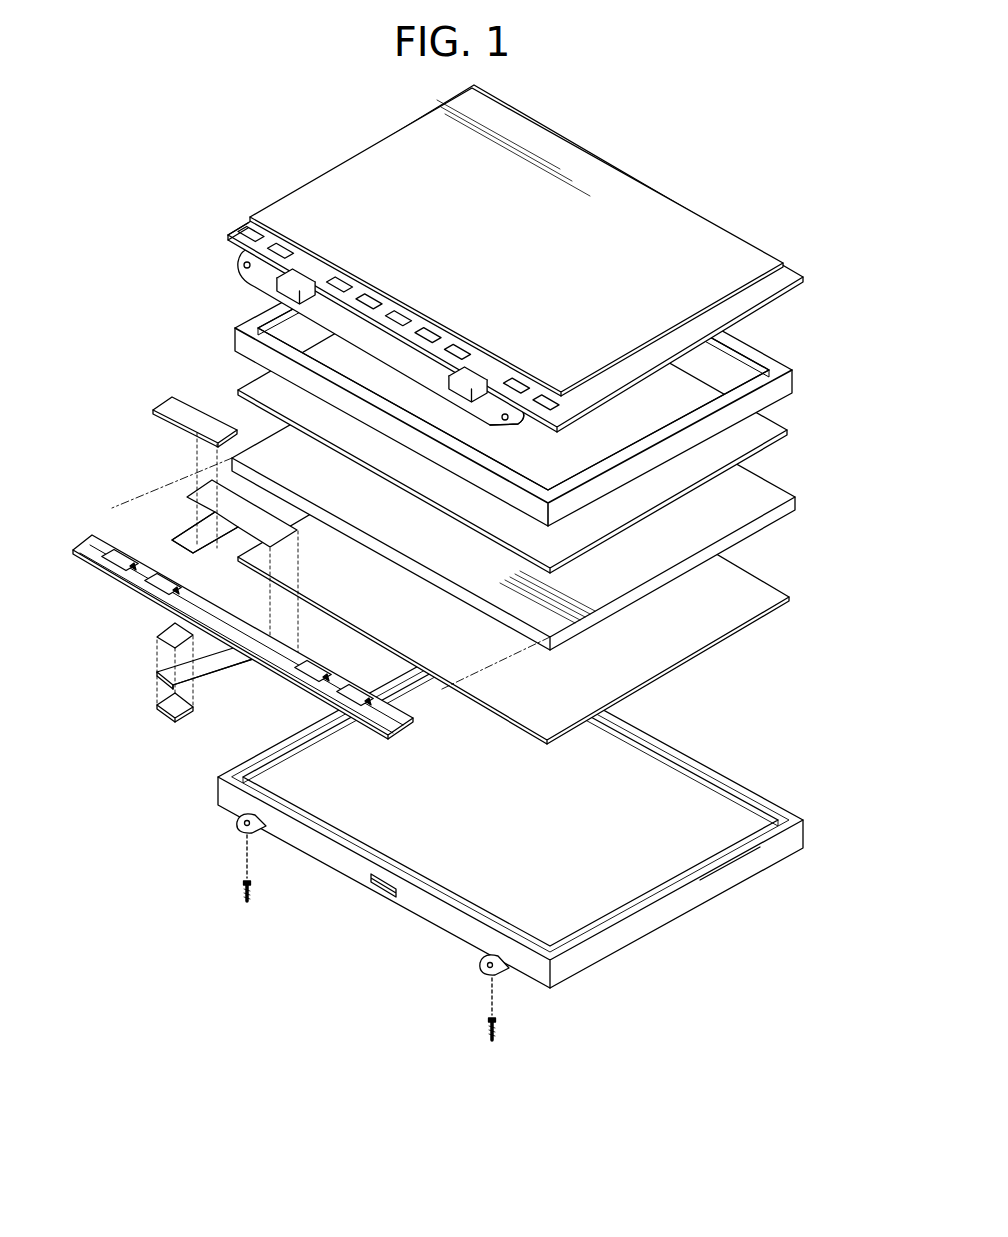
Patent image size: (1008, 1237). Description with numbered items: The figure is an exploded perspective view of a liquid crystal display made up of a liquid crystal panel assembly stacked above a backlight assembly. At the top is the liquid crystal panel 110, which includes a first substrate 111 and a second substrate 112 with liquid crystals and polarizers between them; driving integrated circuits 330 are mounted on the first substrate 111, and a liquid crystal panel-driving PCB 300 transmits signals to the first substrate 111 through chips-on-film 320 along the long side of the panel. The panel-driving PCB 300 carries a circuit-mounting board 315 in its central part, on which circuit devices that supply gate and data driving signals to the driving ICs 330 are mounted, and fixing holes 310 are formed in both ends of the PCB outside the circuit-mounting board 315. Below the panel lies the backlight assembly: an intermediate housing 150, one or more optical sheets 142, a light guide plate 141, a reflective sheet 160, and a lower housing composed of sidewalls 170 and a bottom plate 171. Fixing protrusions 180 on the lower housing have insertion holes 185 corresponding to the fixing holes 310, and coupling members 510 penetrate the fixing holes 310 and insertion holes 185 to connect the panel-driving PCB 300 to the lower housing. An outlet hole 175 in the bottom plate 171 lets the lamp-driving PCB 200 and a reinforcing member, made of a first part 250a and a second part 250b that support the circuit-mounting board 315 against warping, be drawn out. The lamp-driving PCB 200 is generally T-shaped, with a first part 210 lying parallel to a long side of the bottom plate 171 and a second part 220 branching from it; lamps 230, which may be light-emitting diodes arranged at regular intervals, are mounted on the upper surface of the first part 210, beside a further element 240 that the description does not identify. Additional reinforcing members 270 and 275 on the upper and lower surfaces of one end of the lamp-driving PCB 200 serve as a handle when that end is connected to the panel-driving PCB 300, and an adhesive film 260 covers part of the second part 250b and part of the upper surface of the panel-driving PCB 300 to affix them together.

The liquid crystal panel 110 is at (564, 258).
The first substrate 111 is at (785, 279).
The second substrate 112 is at (775, 258).
The light guide plate 141 is at (798, 500).
The optical sheets 142 is at (793, 423).
The intermediate housing 150 is at (797, 372).
The reflective sheet 160 is at (791, 597).
The sidewalls 170 is at (543, 816).
The bottom plate 171 is at (690, 873).
The outlet hole 175 is at (392, 872).
The fixing protrusions 180 is at (480, 970).
The insertion holes 185 is at (478, 960).
The lamp-driving PCB 200 is at (292, 597).
The first part 210 is at (405, 730).
The second part 220 is at (212, 662).
The lamps 230 is at (125, 548).
The light source (LED) 240 is at (96, 542).
The first part of reinforcing member 250a is at (195, 492).
The second part of reinforcing member 250b is at (215, 545).
The adhesive film 260 is at (188, 405).
The additional reinforcing member 270 is at (160, 636).
The additional reinforcing member 275 is at (175, 716).
The liquid crystal panel-driving PCB 300 is at (348, 354).
The fixing holes 310 is at (348, 354).
The circuit-mounting board 315 is at (452, 408).
The chips-on-film 320 is at (300, 266).
The driving integrated circuits 330 is at (246, 226).
The coupling members 510 is at (488, 1030).